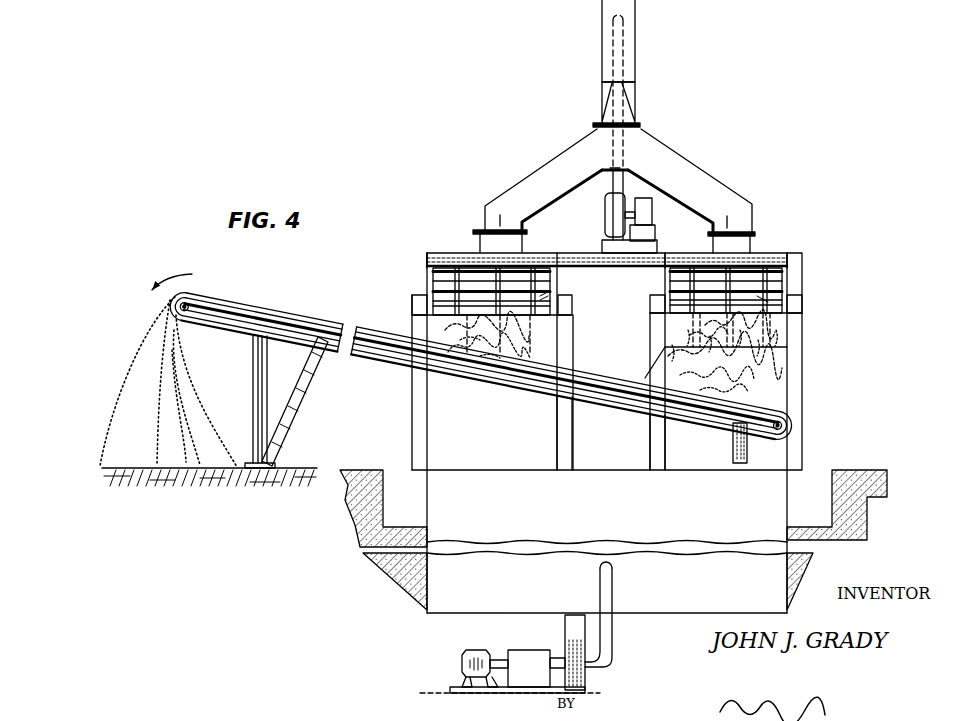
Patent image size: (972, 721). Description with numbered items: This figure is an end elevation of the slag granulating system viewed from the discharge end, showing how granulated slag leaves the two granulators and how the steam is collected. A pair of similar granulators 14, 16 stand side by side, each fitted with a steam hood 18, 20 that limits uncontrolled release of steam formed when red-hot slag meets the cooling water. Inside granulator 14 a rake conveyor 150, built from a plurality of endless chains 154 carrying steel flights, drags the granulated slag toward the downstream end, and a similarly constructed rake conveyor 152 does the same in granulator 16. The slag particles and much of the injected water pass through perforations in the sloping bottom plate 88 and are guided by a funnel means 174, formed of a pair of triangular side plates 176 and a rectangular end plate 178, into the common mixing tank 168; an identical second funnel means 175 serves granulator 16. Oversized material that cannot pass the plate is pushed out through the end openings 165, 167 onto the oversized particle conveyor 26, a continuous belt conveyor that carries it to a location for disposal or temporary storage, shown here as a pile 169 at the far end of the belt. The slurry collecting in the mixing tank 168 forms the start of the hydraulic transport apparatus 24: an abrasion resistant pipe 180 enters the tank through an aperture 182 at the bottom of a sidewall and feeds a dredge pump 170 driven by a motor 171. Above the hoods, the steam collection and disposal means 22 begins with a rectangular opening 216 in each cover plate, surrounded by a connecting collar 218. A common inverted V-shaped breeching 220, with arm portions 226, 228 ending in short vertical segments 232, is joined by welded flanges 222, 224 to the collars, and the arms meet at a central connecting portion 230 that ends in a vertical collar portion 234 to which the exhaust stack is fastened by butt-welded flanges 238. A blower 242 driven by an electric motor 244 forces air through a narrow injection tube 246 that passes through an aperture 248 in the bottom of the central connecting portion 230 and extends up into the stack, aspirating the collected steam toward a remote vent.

The granulator 14 is at (415, 276).
The granulator 16 is at (815, 297).
The steam hood 18 is at (410, 250).
The steam hood 20 is at (792, 252).
The steam collection and disposal means 22 is at (582, 74).
The hydraulic transport apparatus 24 is at (408, 608).
The oversized particle conveyor 26 is at (380, 365).
The sloping granulator bottom plate 88 is at (548, 358).
The rake conveyor 150 is at (490, 343).
The rake conveyor 152 is at (770, 302).
The endless chains 154 is at (548, 296).
The opening 165 is at (433, 323).
The discharge opening 167 is at (537, 318).
The mixing tank 168 is at (745, 525).
The sand stockpile 169 is at (160, 452).
The dredge pump 170 is at (573, 657).
The motor 171 is at (458, 655).
The funnel means 174 is at (490, 438).
The second funnel means 175 is at (777, 388).
The triangular side plates 176 is at (427, 422).
The rectangular end plate 178 is at (520, 453).
The abrasion resistant pipe 180 is at (612, 600).
The aperture 182 is at (612, 563).
The rectangular opening 216 is at (476, 251).
The connecting collar 218 is at (763, 240).
The common breeching 220 is at (528, 197).
The welded flanges 222 is at (482, 228).
The welded flanges 224 is at (737, 230).
The arm portion 226 is at (542, 167).
The arm portion 228 is at (688, 165).
The central connecting portion 230 is at (630, 147).
The vertical segment 232 is at (500, 222).
The vertical collar portion 234 is at (597, 125).
The butt-welded flanges 238 is at (637, 122).
The blower 242 is at (606, 222).
The electric motor 244 is at (652, 205).
The injection tube 246 is at (613, 26).
The aperture 248 is at (622, 170).